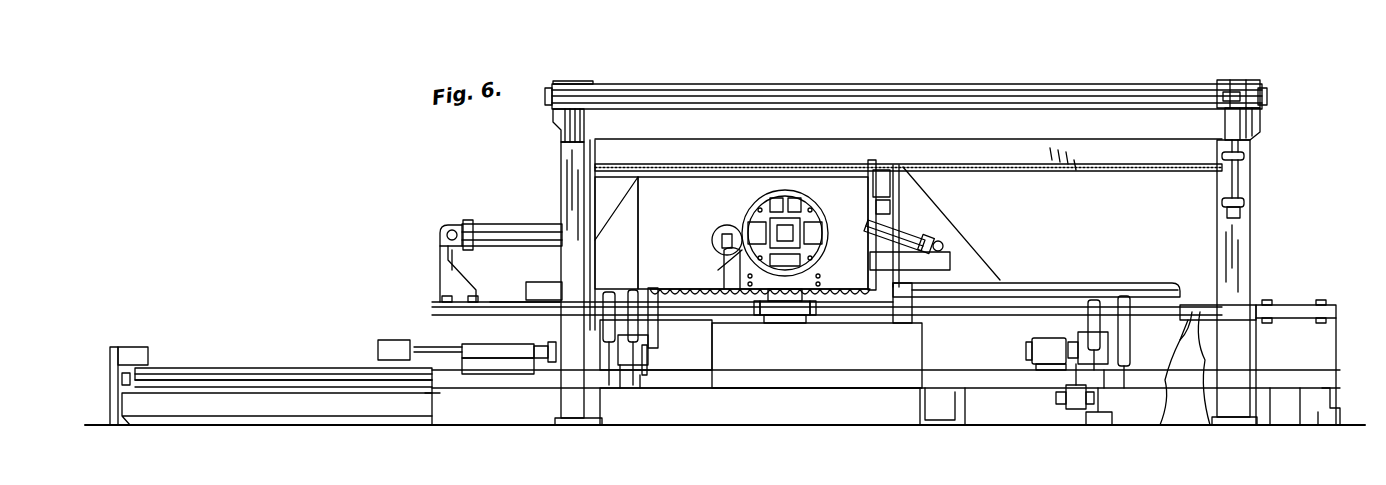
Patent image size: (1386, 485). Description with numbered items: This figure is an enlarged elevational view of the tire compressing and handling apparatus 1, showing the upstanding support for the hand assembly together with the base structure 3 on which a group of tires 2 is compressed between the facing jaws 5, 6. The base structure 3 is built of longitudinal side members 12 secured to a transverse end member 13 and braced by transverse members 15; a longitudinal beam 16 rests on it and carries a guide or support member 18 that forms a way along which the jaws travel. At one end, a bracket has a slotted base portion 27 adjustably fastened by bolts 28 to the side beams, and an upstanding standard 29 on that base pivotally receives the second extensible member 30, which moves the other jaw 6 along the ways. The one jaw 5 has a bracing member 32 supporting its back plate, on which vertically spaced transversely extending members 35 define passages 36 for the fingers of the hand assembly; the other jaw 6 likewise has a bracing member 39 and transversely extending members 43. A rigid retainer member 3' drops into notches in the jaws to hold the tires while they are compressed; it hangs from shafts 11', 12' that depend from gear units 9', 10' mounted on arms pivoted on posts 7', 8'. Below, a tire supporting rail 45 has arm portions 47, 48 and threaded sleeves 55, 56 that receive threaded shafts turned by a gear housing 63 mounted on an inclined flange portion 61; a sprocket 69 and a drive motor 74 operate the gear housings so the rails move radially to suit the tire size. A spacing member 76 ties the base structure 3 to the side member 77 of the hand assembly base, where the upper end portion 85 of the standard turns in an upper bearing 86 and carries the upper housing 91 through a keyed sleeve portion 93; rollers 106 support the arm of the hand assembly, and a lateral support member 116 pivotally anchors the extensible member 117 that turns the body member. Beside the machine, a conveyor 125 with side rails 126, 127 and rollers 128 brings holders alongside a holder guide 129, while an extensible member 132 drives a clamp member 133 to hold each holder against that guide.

The apparatus for preparing vehicle tires 1 is at (428, 170).
The vehicle tires 2 is at (780, 163).
The base structure 3 is at (1312, 362).
The retainer member 3' is at (908, 180).
The one jaw 5 is at (894, 160).
The other jaw 6 is at (672, 165).
The post 7' is at (1245, 282).
The post 8' is at (565, 283).
The gear unit 9' is at (1234, 76).
The gear unit 10' is at (903, 78).
The shaft 11' is at (1214, 134).
The longitudinal side member 12 is at (1279, 422).
The shaft 12' is at (588, 125).
The transverse end member 13 is at (1337, 420).
The transverse member 15 is at (1090, 420).
The longitudinal beam 16 is at (1322, 332).
The guide or support member 18 is at (500, 306).
The base portion 27 is at (462, 306).
The bolts 28 is at (442, 300).
The standard 29 is at (438, 268).
The second extensible member 30 is at (528, 228).
The bracing member 32 is at (932, 218).
The transversely extending members 35 is at (880, 168).
The passages 36 is at (890, 190).
The bracing member 39 is at (632, 230).
The transversely extending members 43 is at (684, 165).
The rail 45 is at (1030, 284).
The arm portion 47 is at (668, 370).
The arm portion 48 is at (903, 318).
The internally threaded sleeve 55 is at (1094, 298).
The internally threaded sleeve 56 is at (640, 300).
The flange portion 61 is at (650, 338).
The gear housing 63 is at (628, 362).
The sprocket 69 is at (648, 360).
The drive motor 74 is at (1042, 352).
The spacing member 76 is at (945, 415).
The side member 77 is at (772, 412).
The upper end portion 85 is at (810, 312).
The upper bearing 86 is at (780, 312).
The upper housing 91 is at (636, 182).
The sleeve portion 93 is at (764, 308).
The rollers 106 is at (748, 214).
The lateral support member 116 is at (950, 262).
The extensible member 117 is at (926, 230).
The conveyor 125 is at (122, 337).
The side rail 126 is at (122, 376).
The side rail 127 is at (436, 430).
The rollers 128 is at (285, 370).
The holder guide 129 is at (148, 355).
The extensible member 132 is at (552, 344).
The clamp member 133 is at (396, 350).